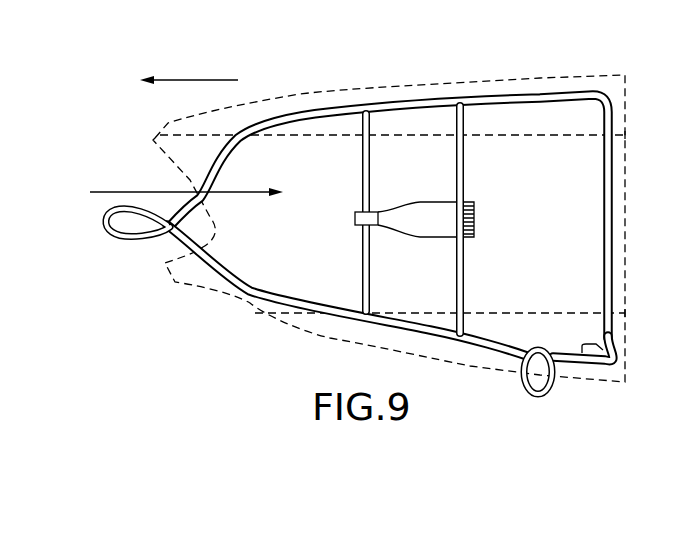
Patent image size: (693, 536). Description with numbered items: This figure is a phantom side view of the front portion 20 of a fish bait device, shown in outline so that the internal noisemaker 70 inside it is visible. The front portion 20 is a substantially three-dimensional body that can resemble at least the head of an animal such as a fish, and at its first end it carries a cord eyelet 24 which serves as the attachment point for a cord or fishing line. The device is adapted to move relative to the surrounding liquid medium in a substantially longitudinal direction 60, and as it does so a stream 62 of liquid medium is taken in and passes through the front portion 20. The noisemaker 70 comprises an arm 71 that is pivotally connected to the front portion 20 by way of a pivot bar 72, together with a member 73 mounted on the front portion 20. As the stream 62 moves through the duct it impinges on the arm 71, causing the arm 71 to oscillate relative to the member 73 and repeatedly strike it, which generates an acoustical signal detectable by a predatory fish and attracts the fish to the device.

The front portion 20 is at (436, 78).
The cord eyelet 24 is at (127, 236).
The longitudinal direction 60 is at (198, 79).
The stream 62 is at (132, 191).
The internal noisemaker 70 is at (394, 190).
The arm 71 is at (420, 226).
The pivot bar 72 is at (362, 252).
The member 73 is at (464, 177).